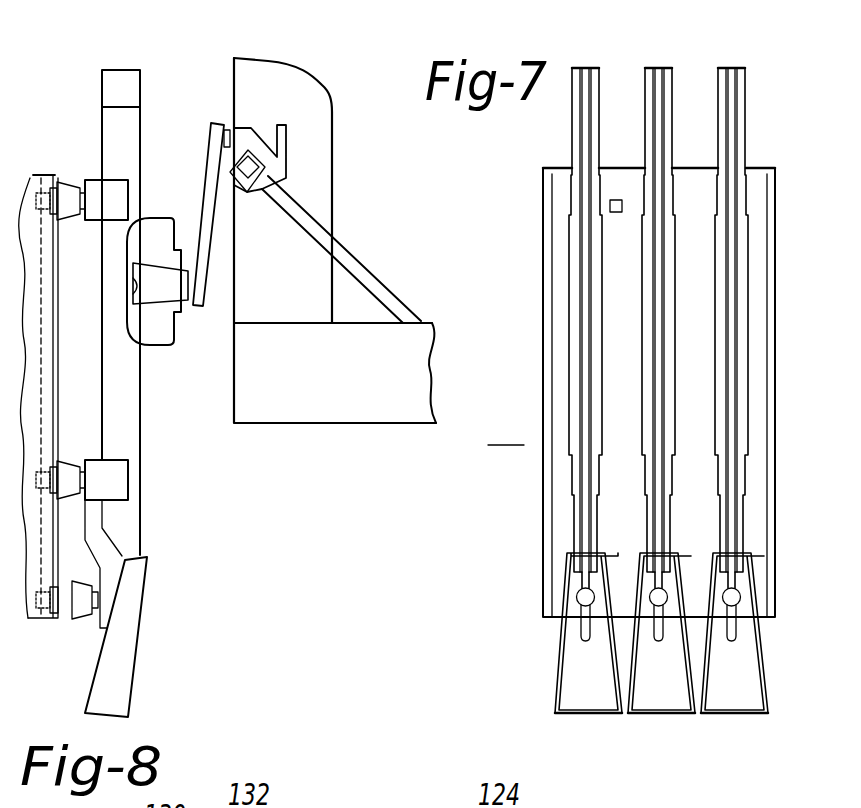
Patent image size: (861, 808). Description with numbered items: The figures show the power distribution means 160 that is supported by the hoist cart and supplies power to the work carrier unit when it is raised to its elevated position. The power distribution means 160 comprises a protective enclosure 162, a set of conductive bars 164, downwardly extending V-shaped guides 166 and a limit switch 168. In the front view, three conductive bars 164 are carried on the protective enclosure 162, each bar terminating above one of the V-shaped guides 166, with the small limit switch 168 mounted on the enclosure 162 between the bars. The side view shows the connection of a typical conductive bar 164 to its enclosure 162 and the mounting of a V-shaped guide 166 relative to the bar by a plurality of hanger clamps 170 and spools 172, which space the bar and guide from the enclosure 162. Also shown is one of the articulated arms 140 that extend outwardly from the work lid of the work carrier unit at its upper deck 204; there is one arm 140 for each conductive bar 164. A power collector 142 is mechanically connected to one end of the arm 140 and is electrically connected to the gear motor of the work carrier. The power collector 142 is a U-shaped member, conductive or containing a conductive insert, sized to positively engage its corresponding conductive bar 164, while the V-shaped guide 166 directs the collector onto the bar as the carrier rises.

In FIG. 8, the articulated arm 140 is at (213, 132).
In FIG. 8, the power collector 142 is at (160, 218).
In FIG. 7, the power distribution means 160 is at (506, 429).
In FIG. 8, the protective enclosure 162 is at (33, 243).
In FIG. 7, the protective enclosure 162 is at (565, 327).
In FIG. 8, the conductive bar 164 is at (133, 439).
In FIG. 7, the conductive bar 164 is at (732, 68).
In FIG. 8, the V-shaped guide 166 is at (128, 636).
In FIG. 7, the V-shaped guide 166 is at (743, 690).
In FIG. 7, the limit switch 168 is at (615, 198).
In FIG. 8, the hanger clamp 170 is at (118, 493).
In FIG. 8, the spool 172 is at (55, 472).
In FIG. 8, the upper deck 204 is at (423, 342).